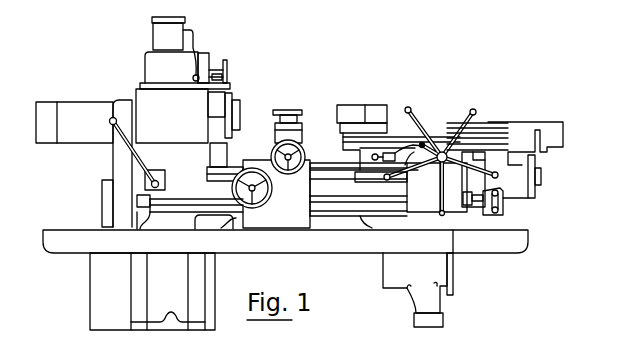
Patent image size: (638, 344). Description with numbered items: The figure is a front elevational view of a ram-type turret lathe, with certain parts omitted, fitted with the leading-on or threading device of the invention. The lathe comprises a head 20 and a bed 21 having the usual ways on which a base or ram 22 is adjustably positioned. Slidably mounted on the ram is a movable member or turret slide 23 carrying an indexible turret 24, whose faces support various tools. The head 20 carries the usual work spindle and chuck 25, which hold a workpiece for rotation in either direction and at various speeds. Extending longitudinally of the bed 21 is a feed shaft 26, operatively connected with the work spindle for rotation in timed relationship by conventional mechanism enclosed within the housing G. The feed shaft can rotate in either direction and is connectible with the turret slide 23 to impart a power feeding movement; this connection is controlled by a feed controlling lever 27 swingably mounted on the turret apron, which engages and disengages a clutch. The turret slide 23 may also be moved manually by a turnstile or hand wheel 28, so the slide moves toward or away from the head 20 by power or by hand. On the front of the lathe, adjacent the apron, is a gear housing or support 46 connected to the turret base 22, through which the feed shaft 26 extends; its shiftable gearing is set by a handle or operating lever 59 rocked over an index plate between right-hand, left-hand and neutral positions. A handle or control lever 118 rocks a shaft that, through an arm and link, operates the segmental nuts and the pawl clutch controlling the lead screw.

The head 20 is at (149, 120).
The work spindle and chuck 25 is at (240, 108).
The bed 21 is at (213, 193).
The base or ram 22 is at (342, 156).
The indexible turret 24 is at (372, 110).
The feed controlling lever 27 is at (388, 150).
The turret slide 23 is at (447, 130).
The turnstile or hand wheel 28 is at (476, 112).
The handle or control lever 118 is at (410, 152).
The feed shaft 26 is at (186, 202).
The gear housing or support 46 is at (517, 187).
The handle or operating lever 59 is at (505, 206).
The housing G is at (113, 160).